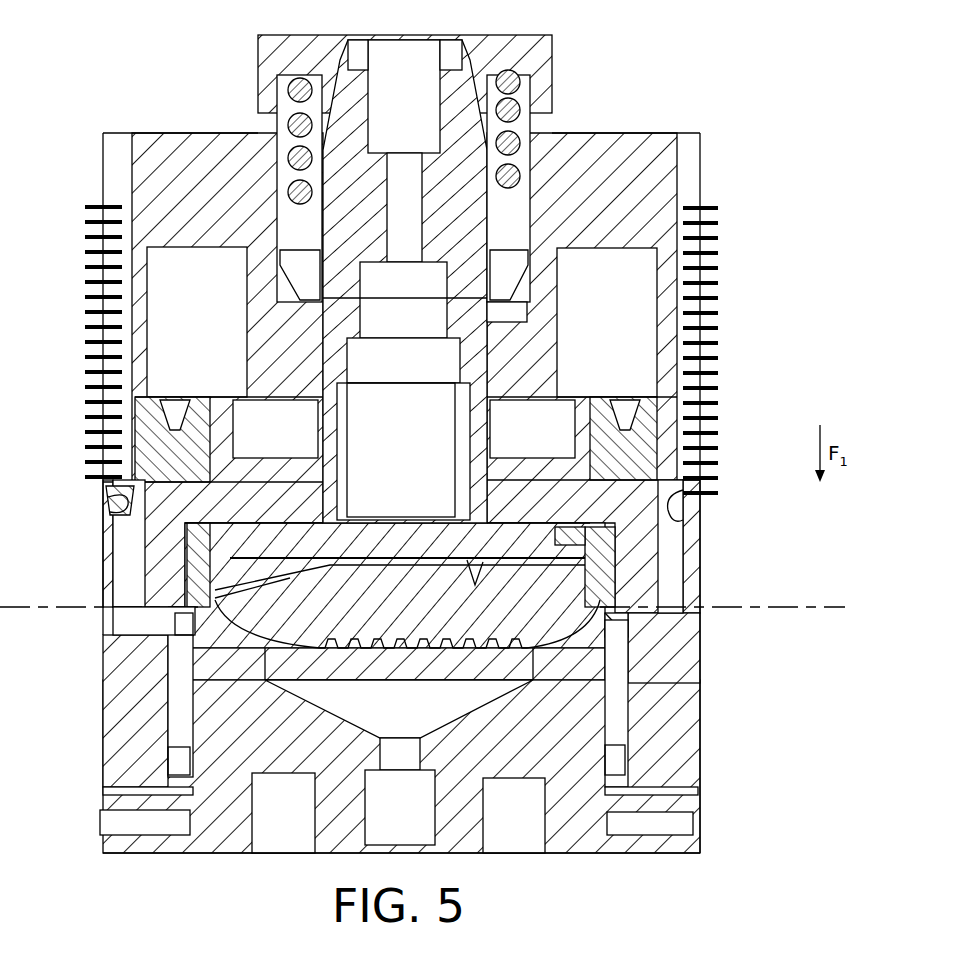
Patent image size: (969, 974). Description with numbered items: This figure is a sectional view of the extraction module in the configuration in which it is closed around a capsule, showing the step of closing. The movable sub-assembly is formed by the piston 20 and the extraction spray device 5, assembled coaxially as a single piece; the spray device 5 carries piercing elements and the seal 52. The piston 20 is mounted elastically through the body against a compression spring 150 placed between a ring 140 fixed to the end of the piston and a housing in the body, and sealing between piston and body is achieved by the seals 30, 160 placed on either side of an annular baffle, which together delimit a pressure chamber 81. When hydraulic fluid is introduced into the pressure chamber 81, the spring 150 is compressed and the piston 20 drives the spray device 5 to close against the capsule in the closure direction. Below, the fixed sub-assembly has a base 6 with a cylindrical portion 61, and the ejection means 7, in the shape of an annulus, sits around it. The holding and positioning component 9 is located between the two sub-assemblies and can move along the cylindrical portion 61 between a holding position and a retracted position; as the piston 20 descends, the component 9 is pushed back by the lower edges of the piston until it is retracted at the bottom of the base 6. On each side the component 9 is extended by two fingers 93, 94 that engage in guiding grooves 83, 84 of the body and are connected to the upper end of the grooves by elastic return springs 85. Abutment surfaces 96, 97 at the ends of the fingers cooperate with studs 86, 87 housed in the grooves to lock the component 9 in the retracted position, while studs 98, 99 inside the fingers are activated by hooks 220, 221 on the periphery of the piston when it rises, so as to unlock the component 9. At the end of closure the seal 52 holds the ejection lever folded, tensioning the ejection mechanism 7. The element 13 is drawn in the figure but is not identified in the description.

The extraction spray device 5 is at (240, 548).
The base 6 is at (703, 843).
The ejection means 7 is at (665, 650).
The holding and positioning component 9 is at (703, 703).
The left block 13 is at (103, 712).
The piston 20 is at (470, 225).
The seal 30 is at (205, 400).
The seal 52 is at (215, 598).
The cylindrical portion 61 is at (617, 740).
The pressure chamber 81 is at (632, 323).
The guiding groove 83 is at (108, 152).
The guiding groove 84 is at (693, 150).
The elastic return spring 85 is at (720, 232).
The stud 86 is at (176, 420).
The stud 87 is at (700, 490).
The finger 93 is at (96, 542).
The finger 94 is at (700, 592).
The abutment surface 96 is at (108, 490).
The abutment surface 97 is at (688, 500).
The stud 98 is at (106, 498).
The stud 99 is at (690, 548).
The ring 140 is at (552, 45).
The compression spring 150 is at (530, 122).
The seal 160 is at (290, 262).
The hook 220 is at (118, 620).
The hook 221 is at (660, 625).